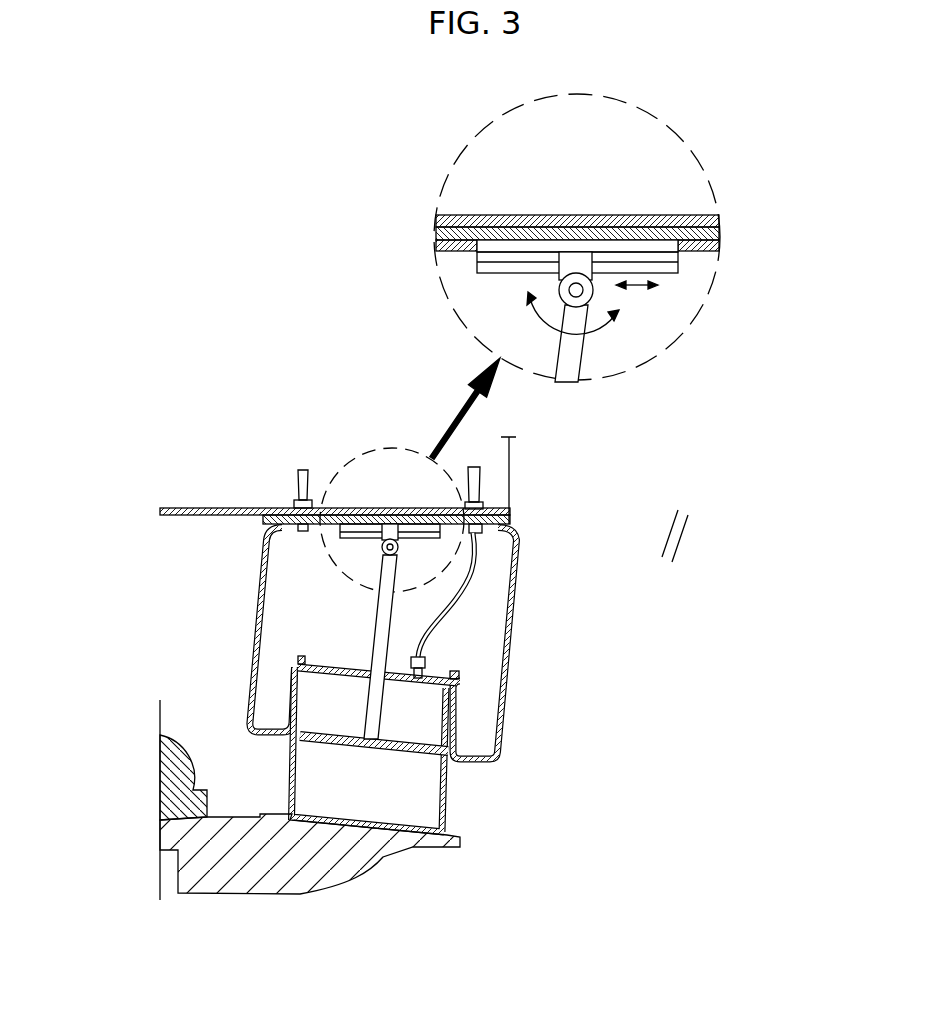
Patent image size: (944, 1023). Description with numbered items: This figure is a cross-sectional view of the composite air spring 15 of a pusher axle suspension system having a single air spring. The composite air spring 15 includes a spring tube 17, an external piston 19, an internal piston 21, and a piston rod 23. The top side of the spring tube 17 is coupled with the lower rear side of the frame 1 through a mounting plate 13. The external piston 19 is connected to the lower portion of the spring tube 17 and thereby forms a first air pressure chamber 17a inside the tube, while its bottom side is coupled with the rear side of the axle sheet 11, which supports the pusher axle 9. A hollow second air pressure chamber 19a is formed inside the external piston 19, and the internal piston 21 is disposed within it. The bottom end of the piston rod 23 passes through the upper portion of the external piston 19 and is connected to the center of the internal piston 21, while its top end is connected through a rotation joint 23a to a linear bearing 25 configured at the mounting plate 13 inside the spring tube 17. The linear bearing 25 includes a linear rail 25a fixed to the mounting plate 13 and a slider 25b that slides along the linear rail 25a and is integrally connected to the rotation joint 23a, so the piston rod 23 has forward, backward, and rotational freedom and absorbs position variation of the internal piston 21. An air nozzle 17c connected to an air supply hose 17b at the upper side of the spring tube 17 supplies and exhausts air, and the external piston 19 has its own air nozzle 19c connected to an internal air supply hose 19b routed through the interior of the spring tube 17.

The frame 1 is at (207, 508).
The pusher axle 9 is at (160, 770).
The axle sheet 11 is at (330, 860).
The mounting plate 13 is at (497, 507).
The composite air spring 15 is at (552, 528).
The spring tube 17 is at (509, 655).
The first air pressure chamber 17a is at (487, 612).
The air supply hose 17b is at (300, 482).
The air nozzle 17c is at (288, 515).
The external piston 19 is at (448, 797).
The second air pressure chamber 19a is at (424, 712).
The internal air supply hose 19b is at (478, 558).
The air nozzle 19c is at (385, 667).
The internal piston 21 is at (450, 737).
The piston rod 23 is at (387, 627).
The rotation joint 23a is at (391, 530).
The linear bearing 25 is at (758, 292).
The linear rail 25a is at (675, 272).
The slider 25b is at (594, 284).